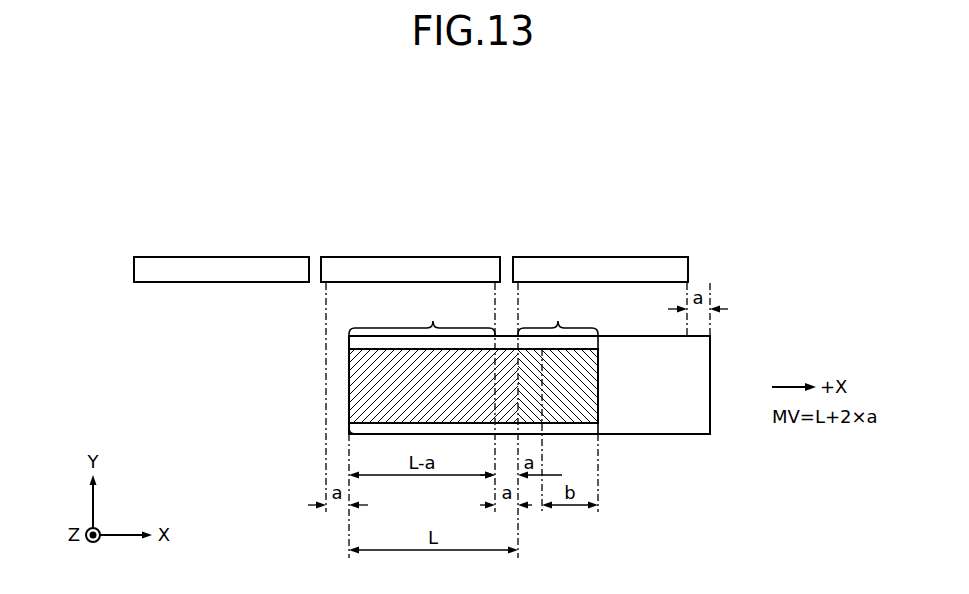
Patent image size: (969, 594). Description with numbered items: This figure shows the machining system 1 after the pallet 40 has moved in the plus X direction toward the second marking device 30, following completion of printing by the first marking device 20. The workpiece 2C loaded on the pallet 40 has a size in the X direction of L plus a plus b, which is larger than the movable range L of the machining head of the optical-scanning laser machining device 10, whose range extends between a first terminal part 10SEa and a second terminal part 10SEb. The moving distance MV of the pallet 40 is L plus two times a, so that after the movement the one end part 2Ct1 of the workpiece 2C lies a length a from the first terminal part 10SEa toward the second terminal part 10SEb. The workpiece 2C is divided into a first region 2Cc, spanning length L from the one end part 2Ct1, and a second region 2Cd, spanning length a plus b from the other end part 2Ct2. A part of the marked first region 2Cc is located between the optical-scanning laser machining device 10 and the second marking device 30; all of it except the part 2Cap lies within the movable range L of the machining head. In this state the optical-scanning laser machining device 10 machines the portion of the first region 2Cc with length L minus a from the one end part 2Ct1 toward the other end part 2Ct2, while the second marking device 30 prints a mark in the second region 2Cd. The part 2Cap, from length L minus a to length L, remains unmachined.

The machining system 1 is at (100, 141).
The first marking device 20 is at (160, 216).
The optical-scanning laser machining device 10 is at (407, 216).
The second marking device 30 is at (622, 216).
The first terminal part 10SEa is at (316, 258).
The second terminal part 10SEb is at (500, 258).
The pallet 40 is at (711, 354).
The workpiece 2C is at (590, 389).
The first region 2Cc is at (422, 359).
The second region 2Cd is at (569, 359).
The part of the first region 2Cap is at (507, 403).
The one end part 2Ct1 is at (339, 366).
The other end part 2Ct2 is at (610, 411).